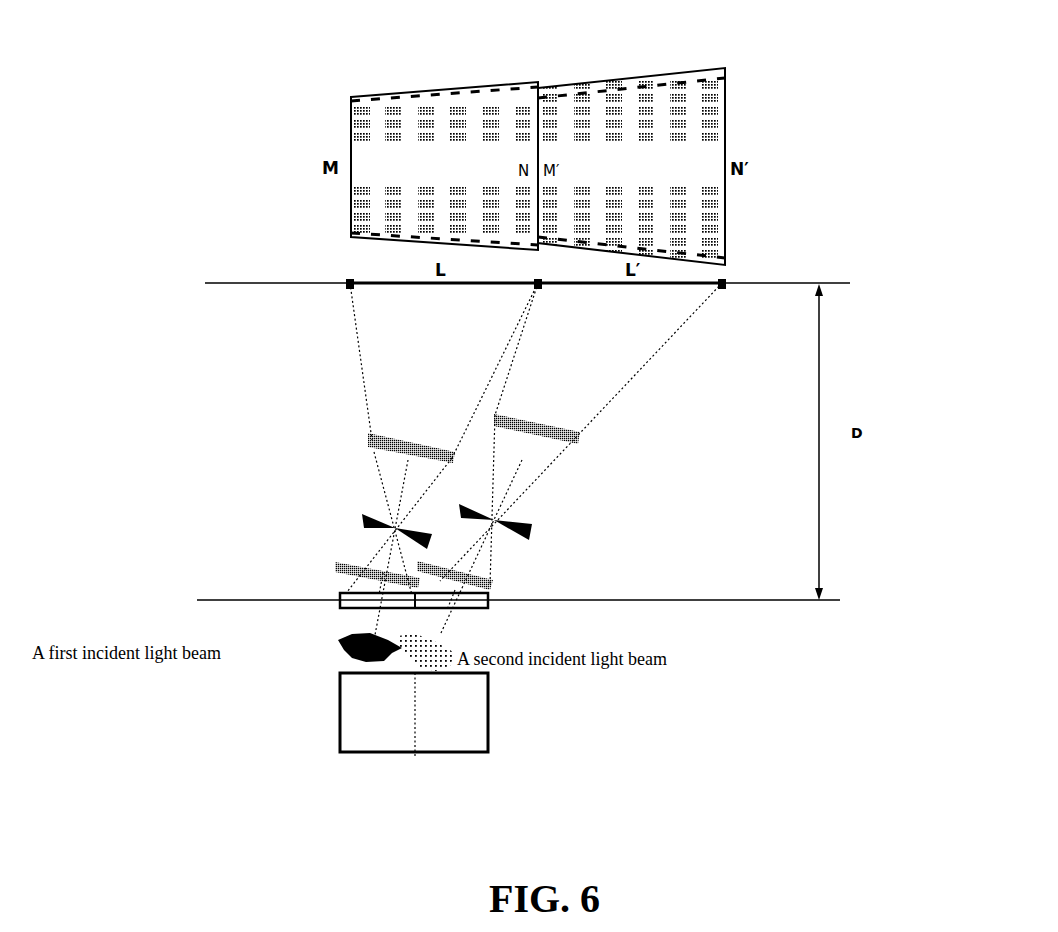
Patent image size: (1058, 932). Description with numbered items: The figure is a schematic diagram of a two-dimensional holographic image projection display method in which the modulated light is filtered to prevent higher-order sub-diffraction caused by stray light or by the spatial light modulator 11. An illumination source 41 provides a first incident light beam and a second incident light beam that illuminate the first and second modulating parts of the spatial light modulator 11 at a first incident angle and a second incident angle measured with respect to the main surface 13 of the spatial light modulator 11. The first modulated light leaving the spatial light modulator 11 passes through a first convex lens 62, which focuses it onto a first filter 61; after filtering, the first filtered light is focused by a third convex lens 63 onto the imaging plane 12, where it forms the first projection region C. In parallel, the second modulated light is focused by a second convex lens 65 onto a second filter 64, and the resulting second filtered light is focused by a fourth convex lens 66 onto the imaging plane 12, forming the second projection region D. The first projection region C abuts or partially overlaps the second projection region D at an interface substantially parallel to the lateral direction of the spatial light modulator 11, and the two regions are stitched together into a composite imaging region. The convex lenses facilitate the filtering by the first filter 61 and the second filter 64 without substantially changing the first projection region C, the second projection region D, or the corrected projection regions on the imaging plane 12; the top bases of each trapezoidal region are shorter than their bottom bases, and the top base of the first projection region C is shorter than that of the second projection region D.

The spatial light modulator 11 is at (340, 597).
The imaging plane 12 is at (745, 281).
The main surface 13 is at (835, 598).
The illumination source 41 is at (490, 745).
The first filter 61 is at (365, 518).
The first convex lens 62 is at (345, 565).
The third convex lens 63 is at (372, 437).
The second filter 64 is at (525, 522).
The second convex lens 65 is at (490, 583).
The fourth convex lens 66 is at (565, 437).
The first projection region C is at (420, 92).
The second projection region D is at (628, 80).